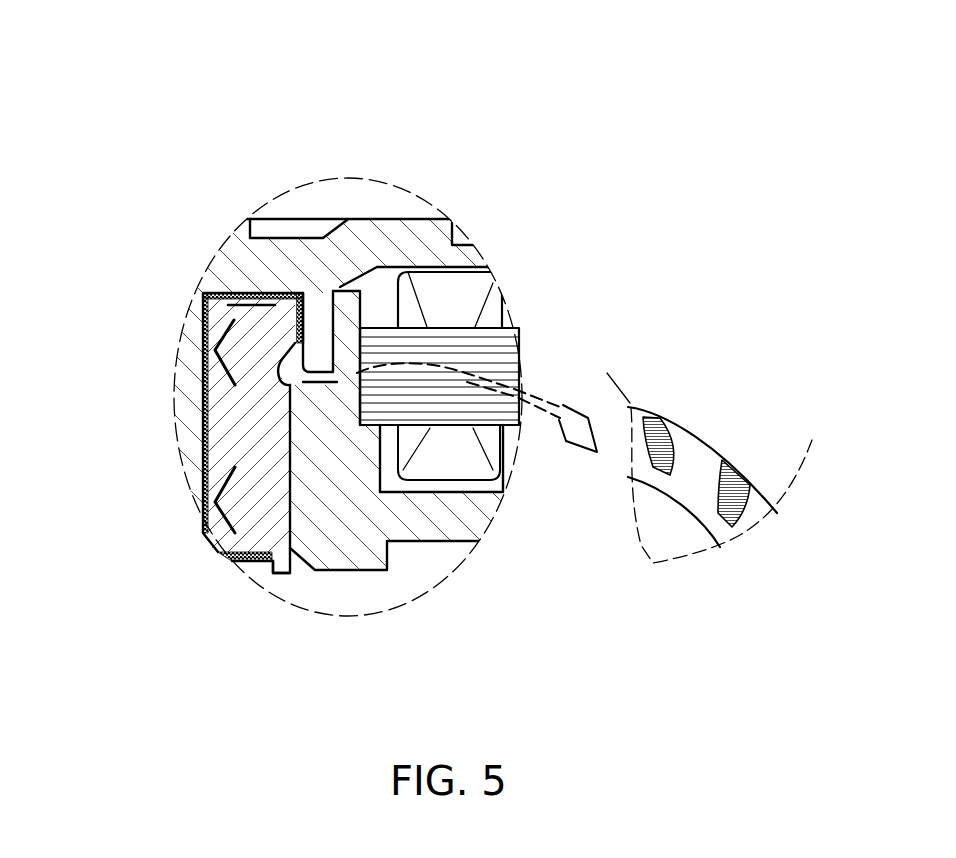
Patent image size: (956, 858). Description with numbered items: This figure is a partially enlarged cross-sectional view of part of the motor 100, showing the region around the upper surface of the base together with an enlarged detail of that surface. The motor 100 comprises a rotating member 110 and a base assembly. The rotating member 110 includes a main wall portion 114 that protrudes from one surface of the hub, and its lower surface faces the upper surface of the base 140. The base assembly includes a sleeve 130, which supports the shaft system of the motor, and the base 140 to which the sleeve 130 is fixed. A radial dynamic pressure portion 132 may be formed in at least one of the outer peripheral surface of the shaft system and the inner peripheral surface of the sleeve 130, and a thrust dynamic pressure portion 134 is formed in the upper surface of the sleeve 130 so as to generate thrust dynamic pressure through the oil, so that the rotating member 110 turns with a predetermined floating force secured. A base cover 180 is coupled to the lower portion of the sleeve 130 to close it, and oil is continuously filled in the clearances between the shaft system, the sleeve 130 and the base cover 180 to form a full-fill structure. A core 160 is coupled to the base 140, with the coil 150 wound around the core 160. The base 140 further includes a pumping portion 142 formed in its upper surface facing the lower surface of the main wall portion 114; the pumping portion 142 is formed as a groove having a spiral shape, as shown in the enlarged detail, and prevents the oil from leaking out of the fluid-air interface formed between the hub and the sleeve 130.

The motor 100 is at (360, 37).
The rotating member 110 is at (418, 208).
The main wall portion 114 is at (316, 300).
The sleeve 130 is at (232, 565).
The radial dynamic pressure portion 132 is at (203, 357).
The thrust dynamic pressure portion 134 is at (253, 307).
The base 140 is at (342, 527).
The pumping portion 142 is at (295, 470).
The coil 150 is at (443, 467).
The core 160 is at (500, 360).
The base cover 180 is at (257, 561).